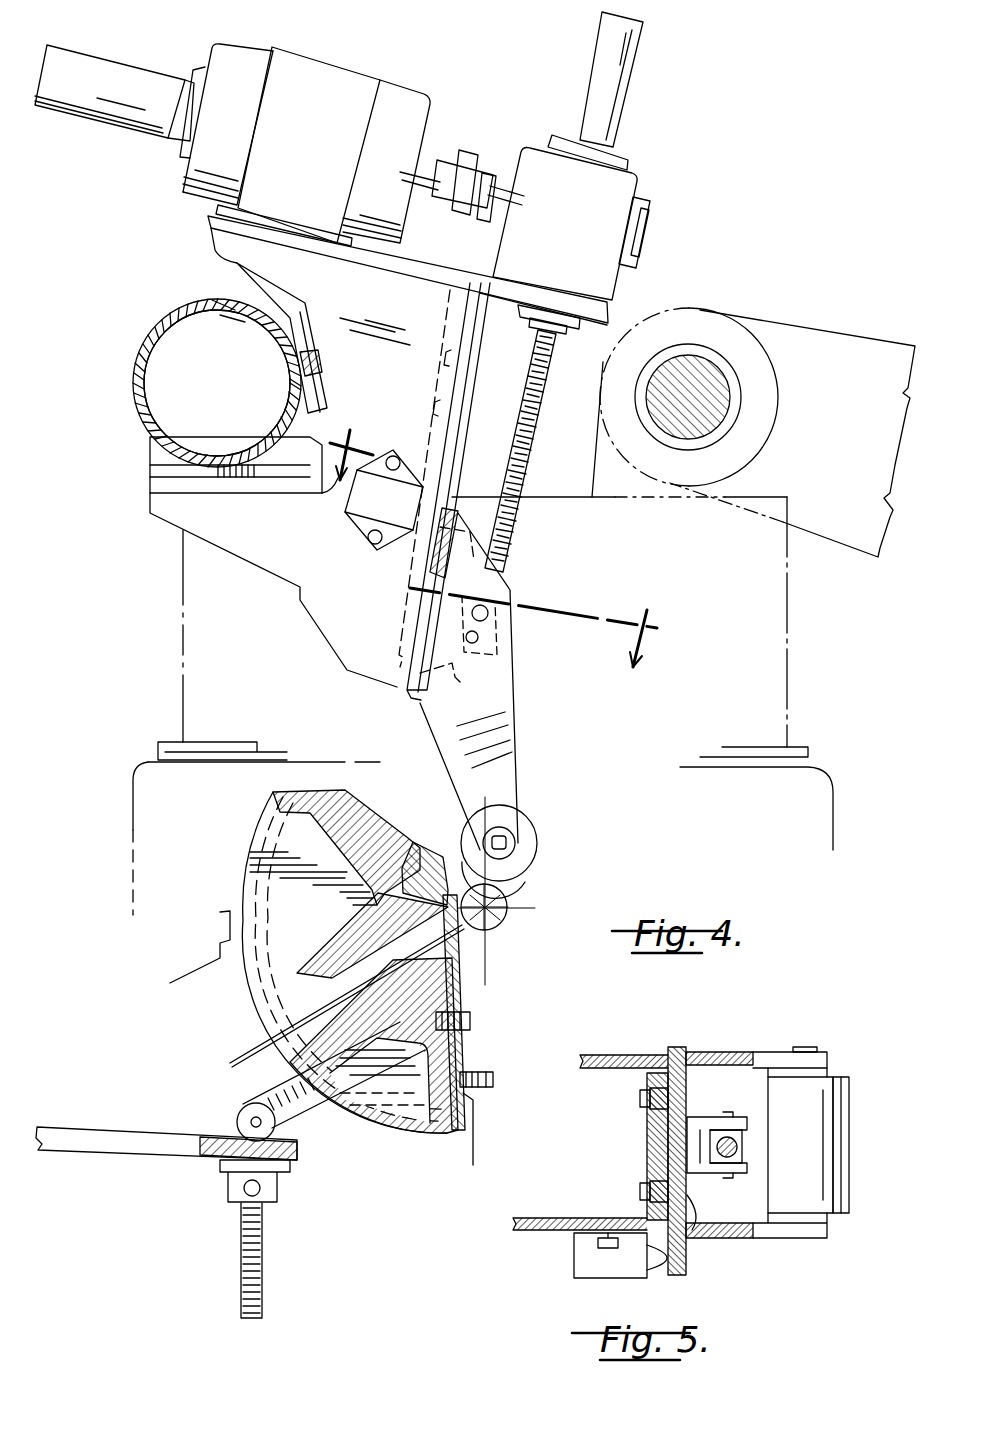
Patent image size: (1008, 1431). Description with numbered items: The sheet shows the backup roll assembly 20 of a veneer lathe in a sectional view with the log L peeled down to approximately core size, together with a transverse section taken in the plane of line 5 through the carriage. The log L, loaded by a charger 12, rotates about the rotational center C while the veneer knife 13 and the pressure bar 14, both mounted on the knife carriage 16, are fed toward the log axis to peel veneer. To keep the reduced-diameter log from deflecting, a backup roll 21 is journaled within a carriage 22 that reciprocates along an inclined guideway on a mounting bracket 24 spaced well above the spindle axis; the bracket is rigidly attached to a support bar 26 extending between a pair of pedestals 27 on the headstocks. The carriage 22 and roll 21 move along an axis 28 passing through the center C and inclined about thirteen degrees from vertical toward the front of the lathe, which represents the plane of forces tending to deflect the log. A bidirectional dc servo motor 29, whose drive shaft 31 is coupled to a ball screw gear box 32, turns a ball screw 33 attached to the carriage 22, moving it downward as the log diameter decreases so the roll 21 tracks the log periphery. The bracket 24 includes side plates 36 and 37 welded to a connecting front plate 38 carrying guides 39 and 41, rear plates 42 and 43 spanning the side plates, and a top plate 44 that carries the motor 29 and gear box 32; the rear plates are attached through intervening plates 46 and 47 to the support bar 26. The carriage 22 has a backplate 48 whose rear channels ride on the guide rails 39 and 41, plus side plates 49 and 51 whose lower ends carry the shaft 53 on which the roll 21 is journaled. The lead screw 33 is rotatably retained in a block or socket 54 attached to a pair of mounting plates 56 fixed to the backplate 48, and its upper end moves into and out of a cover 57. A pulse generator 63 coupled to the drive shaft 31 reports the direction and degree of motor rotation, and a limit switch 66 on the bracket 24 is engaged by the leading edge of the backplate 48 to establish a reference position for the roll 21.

In FIG. 4, the line 5— 5 is at (493, 531).
In FIG. 4, the charger 12 is at (858, 333).
In FIG. 4, the veneer knife 13 is at (490, 930).
In FIG. 4, the pressure bar 14 is at (458, 880).
In FIG. 4, the knife carriage 16 is at (220, 943).
In FIG. 4, the backup roll assembly 20 is at (640, 310).
In FIG. 4, the backup roll 21 is at (538, 832).
In FIG. 5, the backup roll 21 is at (850, 1130).
In FIG. 4, the carriage 22 is at (520, 714).
In FIG. 5, the carriage 22 is at (770, 1047).
In FIG. 4, the mounting bracket 24 is at (293, 594).
In FIG. 5, the mounting bracket 24 is at (520, 1235).
In FIG. 4, the support bar 26 is at (133, 342).
In FIG. 4, the pedestals 27 is at (183, 676).
In FIG. 4, the axis 28 is at (522, 876).
In FIG. 4, the servo motor 29 is at (337, 75).
In FIG. 4, the servo motor drive shaft 31 is at (432, 158).
In FIG. 4, the ball screw gear box 32 is at (638, 195).
In FIG. 4, the ball screw 33 is at (552, 392).
In FIG. 5, the side plate 36 is at (603, 1055).
In FIG. 4, the side plate 37 is at (415, 382).
In FIG. 5, the side plate 37 is at (548, 1218).
In FIG. 4, the front plate 38 is at (388, 620).
In FIG. 5, the front plate 38 is at (650, 1152).
In FIG. 5, the guide 39 is at (690, 1060).
In FIG. 5, the guide 41 is at (694, 1240).
In FIG. 4, the rear plate 42 is at (150, 496).
In FIG. 4, the rear plate 43 is at (318, 343).
In FIG. 4, the top plate 44 is at (393, 267).
In FIG. 4, the intervening plate 46 is at (150, 457).
In FIG. 4, the intervening plate 47 is at (283, 360).
In FIG. 4, the backplate 48 is at (465, 548).
In FIG. 5, the backplate 48 is at (680, 1110).
In FIG. 5, the side plate 49 is at (725, 1052).
In FIG. 5, the side plate 51 is at (760, 1238).
In FIG. 5, the shaft 53 is at (812, 1047).
In FIG. 4, the block or socket 54 is at (497, 625).
In FIG. 5, the block or socket 54 is at (740, 1150).
In FIG. 4, the mounting plates 56 is at (456, 668).
In FIG. 5, the mounting plates 56 is at (748, 1122).
In FIG. 4, the cover 57 is at (633, 88).
In FIG. 4, the pulse generator 63 is at (103, 66).
In FIG. 4, the limit switch 66 is at (348, 500).
In FIG. 5, the limit switch 66 is at (588, 1275).
In FIG. 4, the rotational center C is at (508, 900).
In FIG. 4, the log L is at (522, 918).